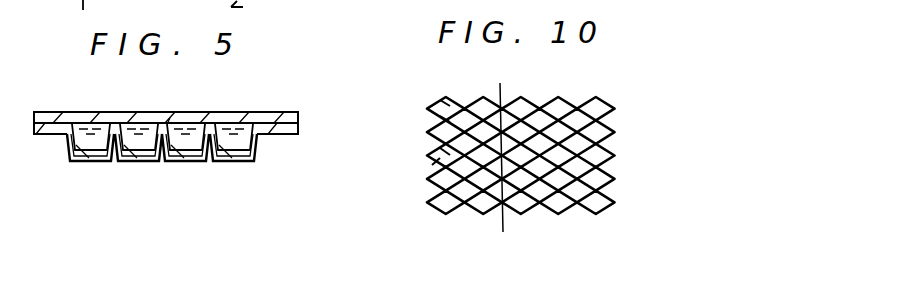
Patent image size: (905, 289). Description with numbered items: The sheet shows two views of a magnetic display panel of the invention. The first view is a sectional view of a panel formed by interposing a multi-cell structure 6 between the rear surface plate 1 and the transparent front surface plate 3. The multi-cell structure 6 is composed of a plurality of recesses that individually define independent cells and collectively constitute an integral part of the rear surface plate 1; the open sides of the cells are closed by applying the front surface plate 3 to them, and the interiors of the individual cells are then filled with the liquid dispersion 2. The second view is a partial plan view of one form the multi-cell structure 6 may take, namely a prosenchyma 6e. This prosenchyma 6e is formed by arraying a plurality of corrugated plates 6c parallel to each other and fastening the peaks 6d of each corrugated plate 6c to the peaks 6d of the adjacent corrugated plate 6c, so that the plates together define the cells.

In FIG. 5, the rear surface plate 1 is at (92, 158).
In FIG. 5, the liquid dispersion 2 is at (236, 141).
In FIG. 5, the transparent front surface plate 3 is at (80, 112).
In FIG. 5, the multi-cell structure 6 is at (172, 118).
In FIG. 10, the multi-cell structure 6 is at (608, 97).
In FIG. 10, the corrugated plate 6c is at (447, 97).
In FIG. 10, the peak of corrugated plate 6d is at (503, 162).
In FIG. 10, the prosenchyma 6e is at (443, 152).